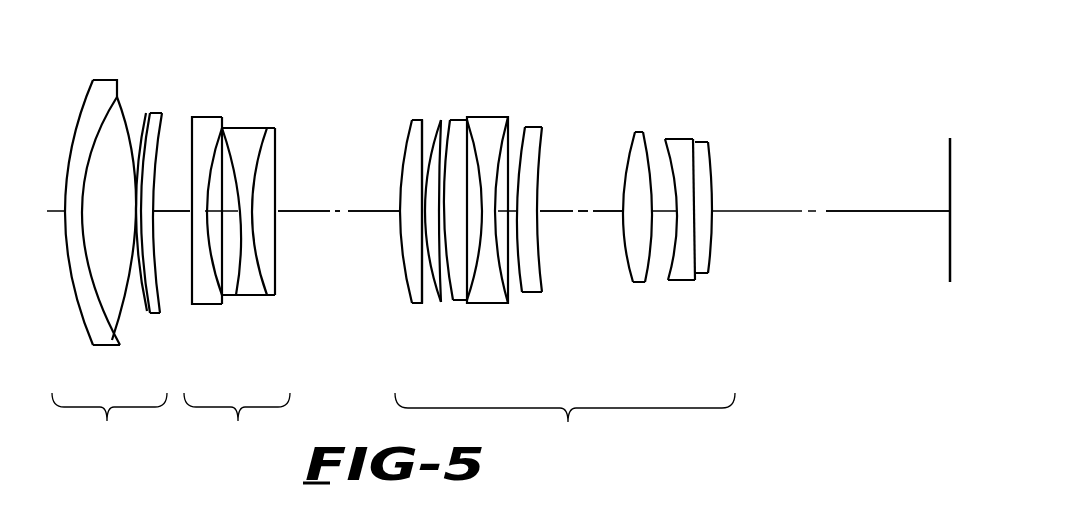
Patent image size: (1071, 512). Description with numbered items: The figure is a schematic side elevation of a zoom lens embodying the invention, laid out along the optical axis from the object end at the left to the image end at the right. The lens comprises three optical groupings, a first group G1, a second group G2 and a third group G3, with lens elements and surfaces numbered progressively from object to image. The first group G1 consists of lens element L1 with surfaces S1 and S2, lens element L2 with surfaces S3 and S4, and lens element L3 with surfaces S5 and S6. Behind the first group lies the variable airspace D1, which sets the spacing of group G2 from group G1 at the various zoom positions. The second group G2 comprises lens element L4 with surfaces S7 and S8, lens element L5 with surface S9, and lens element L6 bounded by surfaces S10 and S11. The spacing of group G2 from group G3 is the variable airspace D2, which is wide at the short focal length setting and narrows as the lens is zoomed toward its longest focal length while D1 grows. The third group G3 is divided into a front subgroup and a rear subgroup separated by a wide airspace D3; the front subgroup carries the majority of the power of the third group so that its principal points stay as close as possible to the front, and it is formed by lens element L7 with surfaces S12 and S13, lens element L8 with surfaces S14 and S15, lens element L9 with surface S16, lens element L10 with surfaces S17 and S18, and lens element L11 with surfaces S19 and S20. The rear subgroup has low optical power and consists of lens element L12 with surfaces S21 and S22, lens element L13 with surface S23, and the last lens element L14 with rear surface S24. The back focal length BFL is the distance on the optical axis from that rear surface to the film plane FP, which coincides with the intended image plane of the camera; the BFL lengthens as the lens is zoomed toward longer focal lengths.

The lens element L1 is at (86, 215).
The lens element L2 is at (148, 212).
The lens element L3 is at (185, 224).
The lens element L4 is at (213, 207).
The lens element L5 is at (263, 207).
The lens element L6 is at (298, 197).
The lens element L7 is at (387, 215).
The lens element L8 is at (443, 207).
The lens element L9 is at (491, 212).
The lens element L10 is at (525, 191).
The lens element L11 is at (563, 185).
The lens element L12 is at (657, 214).
The lens element L13 is at (719, 198).
The lens element L14 is at (737, 183).
The lens surface S1 is at (86, 330).
The lens surface S2 is at (112, 345).
The lens surface S3 is at (124, 318).
The lens surface S4 is at (150, 314).
The lens surface S5 is at (193, 308).
The lens surface S6 is at (203, 305).
The lens surface S7 is at (205, 249).
The lens surface S8 is at (247, 297).
The lens surface S9 is at (270, 297).
The lens surface S10 is at (276, 259).
The lens surface S11 is at (405, 266).
The lens surface S12 is at (410, 302).
The lens surface S13 is at (432, 300).
The lens surface S14 is at (441, 300).
The lens surface S15 is at (455, 302).
The lens surface S16 is at (480, 300).
The lens surface S17 is at (507, 287).
The lens surface S18 is at (528, 263).
The lens surface S19 is at (537, 238).
The lens surface S20 is at (628, 272).
The lens surface S21 is at (650, 265).
The lens surface S22 is at (680, 262).
The lens surface S23 is at (697, 255).
The lens surface S24 is at (715, 242).
The first lens group G1 is at (109, 427).
The second lens group G2 is at (237, 427).
The third lens group G3 is at (565, 427).
The first variable airspace D1 is at (174, 196).
The second variable airspace D2 is at (339, 196).
The third group subgroup spacing D3 is at (581, 196).
The back focal length BFL is at (886, 196).
The film plane FP is at (947, 158).